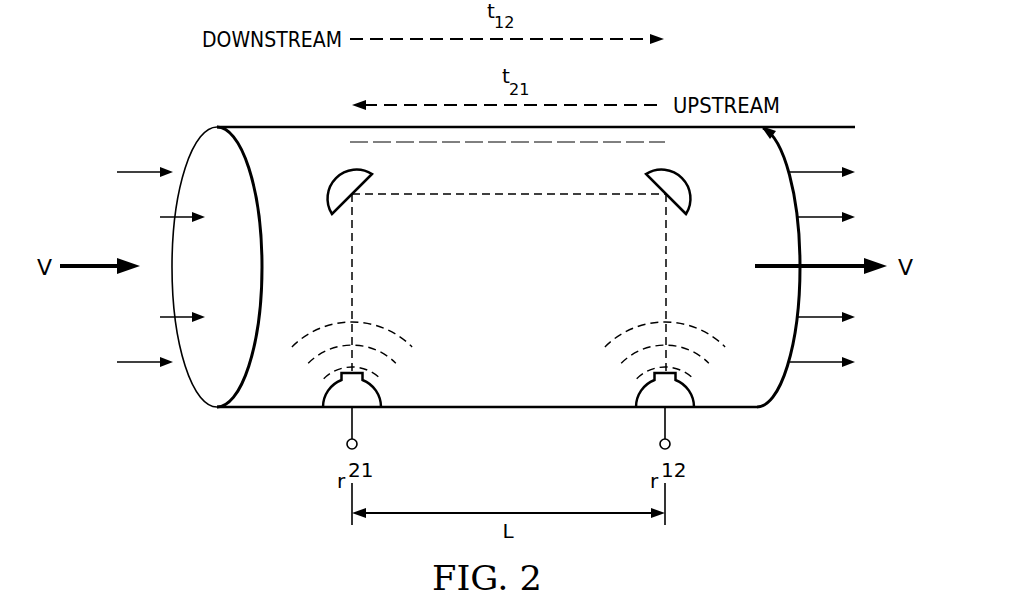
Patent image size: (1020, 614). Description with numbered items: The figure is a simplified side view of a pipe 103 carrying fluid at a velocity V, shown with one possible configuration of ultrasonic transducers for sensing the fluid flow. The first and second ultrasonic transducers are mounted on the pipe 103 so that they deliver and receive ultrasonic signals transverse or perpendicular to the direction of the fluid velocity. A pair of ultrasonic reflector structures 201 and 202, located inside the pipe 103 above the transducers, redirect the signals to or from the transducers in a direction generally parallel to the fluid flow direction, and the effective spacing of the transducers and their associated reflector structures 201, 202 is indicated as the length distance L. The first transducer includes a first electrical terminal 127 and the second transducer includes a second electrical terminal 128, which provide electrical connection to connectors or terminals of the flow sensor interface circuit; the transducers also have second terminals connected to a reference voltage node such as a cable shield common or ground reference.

The pipe 103 is at (281, 121).
The ultrasonic reflector structure 201 is at (330, 175).
The ultrasonic reflector structure 202 is at (717, 163).
The first electrical terminal 127 is at (352, 426).
The second electrical terminal 128 is at (665, 425).